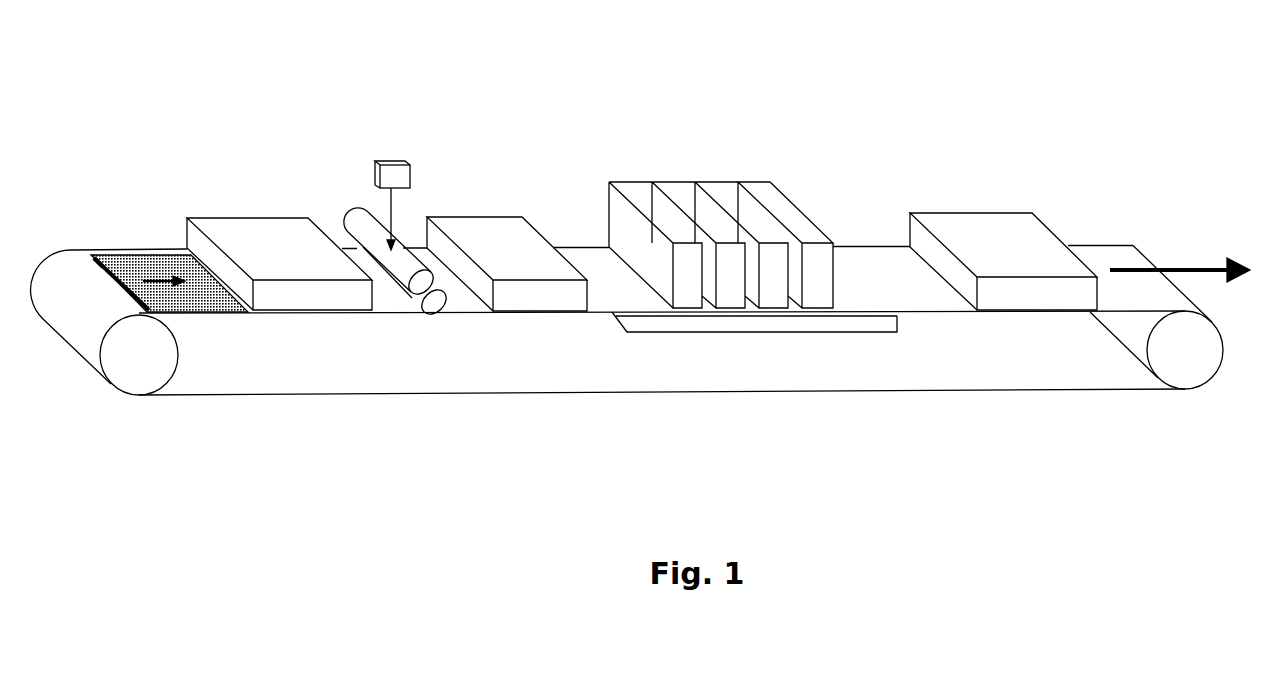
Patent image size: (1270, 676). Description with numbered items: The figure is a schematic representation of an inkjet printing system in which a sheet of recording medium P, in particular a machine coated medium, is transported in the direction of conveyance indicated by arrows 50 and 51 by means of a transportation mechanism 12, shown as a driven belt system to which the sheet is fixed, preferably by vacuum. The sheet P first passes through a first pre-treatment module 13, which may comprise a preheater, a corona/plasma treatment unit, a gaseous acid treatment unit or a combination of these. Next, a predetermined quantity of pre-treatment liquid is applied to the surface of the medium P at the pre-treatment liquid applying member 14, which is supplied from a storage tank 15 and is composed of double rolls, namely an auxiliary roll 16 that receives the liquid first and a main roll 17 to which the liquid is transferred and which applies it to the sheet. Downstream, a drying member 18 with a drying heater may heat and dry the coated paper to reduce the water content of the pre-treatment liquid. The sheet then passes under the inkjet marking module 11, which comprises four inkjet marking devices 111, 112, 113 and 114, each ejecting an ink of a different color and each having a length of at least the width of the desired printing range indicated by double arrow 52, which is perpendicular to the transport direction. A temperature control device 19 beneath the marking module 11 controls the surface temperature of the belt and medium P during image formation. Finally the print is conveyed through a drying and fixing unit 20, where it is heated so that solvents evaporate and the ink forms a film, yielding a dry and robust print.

The inkjet marking module 11 is at (715, 166).
The inkjet marking device 111 is at (783, 211).
The inkjet marking device 112 is at (713, 182).
The inkjet marking device 113 is at (672, 181).
The inkjet marking device 114 is at (627, 182).
The transportation mechanism 12 is at (160, 370).
The first pre-treatment module 13 is at (258, 222).
The pre-treatment liquid applying member 14 is at (389, 150).
The storage tank 15 is at (388, 162).
The auxiliary roll 16 is at (353, 210).
The main roll 17 is at (437, 313).
The drying member 18 is at (496, 220).
The temperature control device 19 is at (775, 333).
The drying and fixing unit 20 is at (978, 221).
The arrow 50 is at (163, 278).
The arrow 51 is at (1142, 266).
The double arrow 52 is at (95, 307).
The recording medium P is at (106, 255).